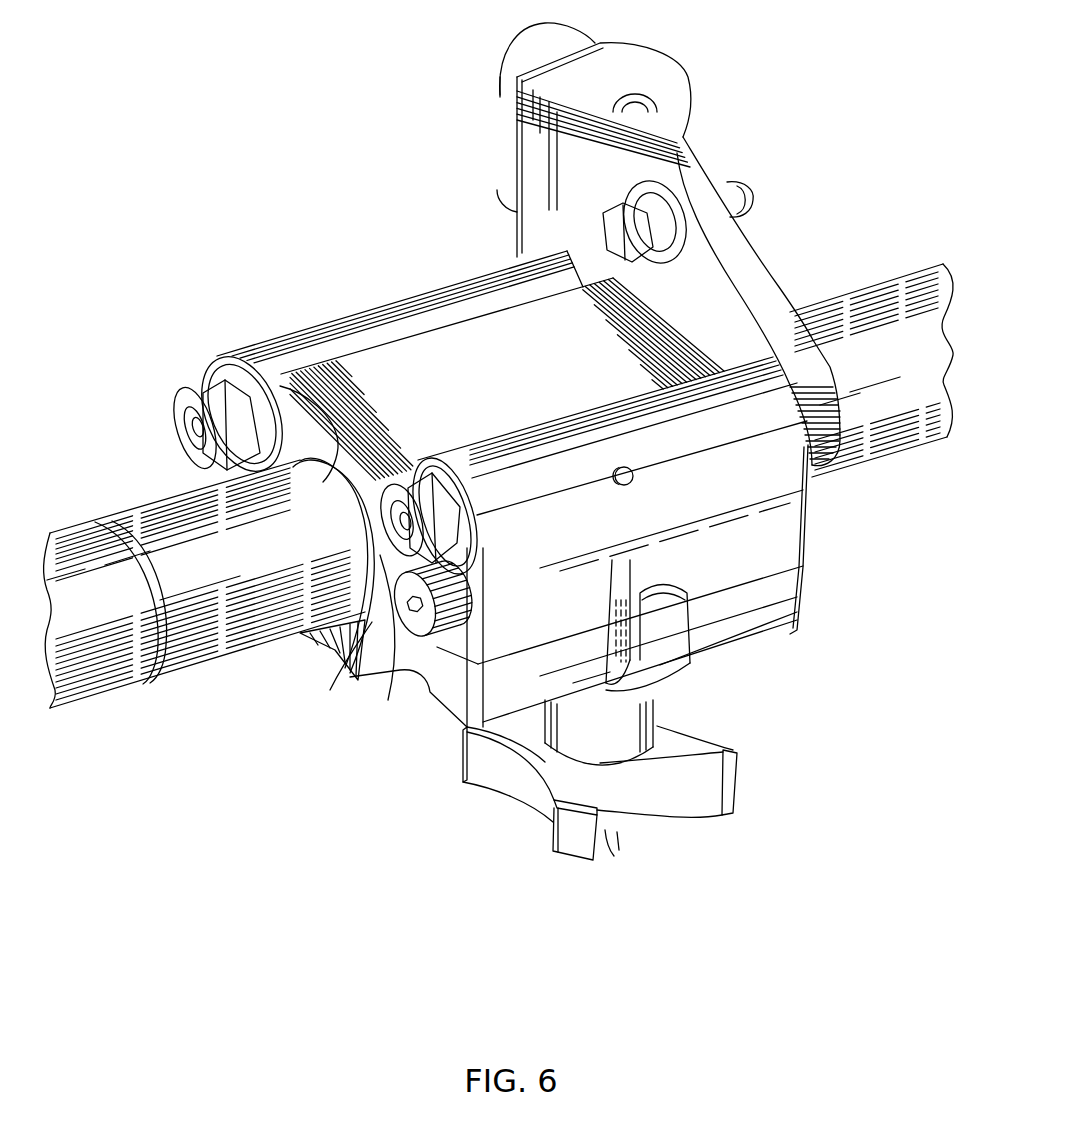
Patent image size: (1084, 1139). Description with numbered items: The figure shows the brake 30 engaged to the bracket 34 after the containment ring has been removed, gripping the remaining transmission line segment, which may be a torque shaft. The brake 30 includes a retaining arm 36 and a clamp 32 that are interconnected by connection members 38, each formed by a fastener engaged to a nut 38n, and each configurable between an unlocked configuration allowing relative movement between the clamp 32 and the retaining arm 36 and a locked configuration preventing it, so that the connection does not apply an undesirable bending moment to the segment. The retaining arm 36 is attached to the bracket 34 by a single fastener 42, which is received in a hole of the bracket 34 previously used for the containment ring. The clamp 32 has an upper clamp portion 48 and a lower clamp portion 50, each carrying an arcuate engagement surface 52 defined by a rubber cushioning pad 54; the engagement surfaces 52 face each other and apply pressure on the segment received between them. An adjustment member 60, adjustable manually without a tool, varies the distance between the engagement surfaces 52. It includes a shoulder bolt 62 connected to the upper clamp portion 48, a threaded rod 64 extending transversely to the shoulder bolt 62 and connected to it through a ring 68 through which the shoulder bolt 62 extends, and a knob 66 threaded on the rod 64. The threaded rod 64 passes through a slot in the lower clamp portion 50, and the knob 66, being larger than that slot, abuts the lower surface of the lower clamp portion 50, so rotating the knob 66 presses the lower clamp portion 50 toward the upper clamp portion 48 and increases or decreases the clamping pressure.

The brake 30 is at (242, 258).
The clamp 32 is at (413, 297).
The bracket 34 is at (608, 141).
The retaining arm 36 is at (704, 281).
The connection member 38 is at (176, 424).
The nut 38n is at (188, 398).
The fastener 42 is at (613, 241).
The upper clamp portion 48 is at (344, 320).
The lower clamp portion 50 is at (760, 605).
The engagement surface 52 is at (284, 406).
The cushioning pad 54 is at (331, 474).
The adjustment member 60 is at (693, 837).
The shoulder bolt 62 is at (427, 615).
The threaded rod 64 is at (618, 854).
The knob 66 is at (574, 842).
The ring 68 is at (643, 556).